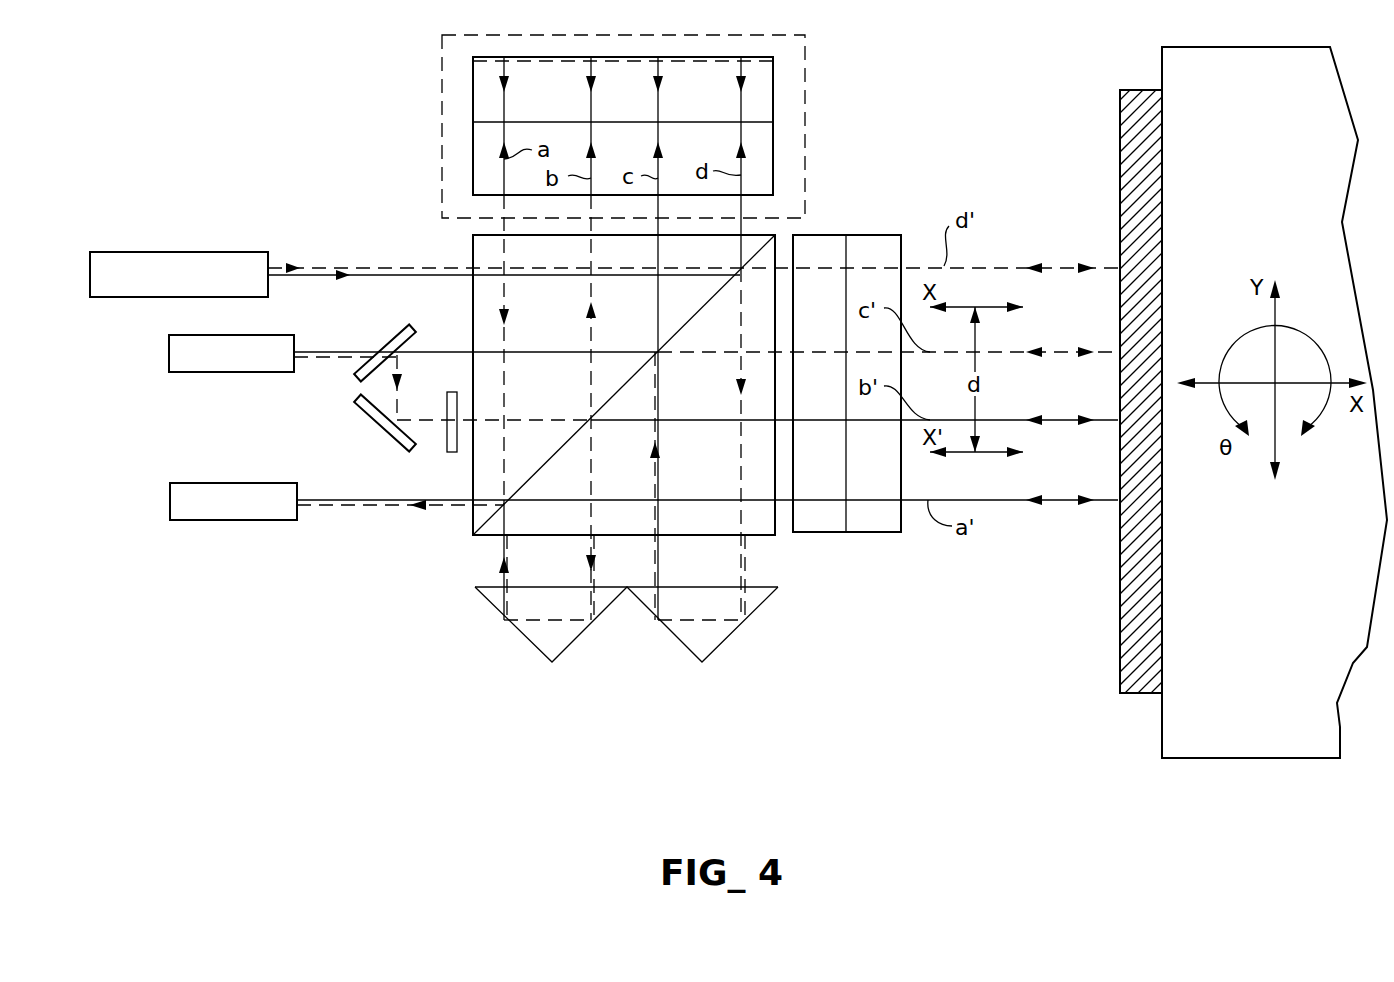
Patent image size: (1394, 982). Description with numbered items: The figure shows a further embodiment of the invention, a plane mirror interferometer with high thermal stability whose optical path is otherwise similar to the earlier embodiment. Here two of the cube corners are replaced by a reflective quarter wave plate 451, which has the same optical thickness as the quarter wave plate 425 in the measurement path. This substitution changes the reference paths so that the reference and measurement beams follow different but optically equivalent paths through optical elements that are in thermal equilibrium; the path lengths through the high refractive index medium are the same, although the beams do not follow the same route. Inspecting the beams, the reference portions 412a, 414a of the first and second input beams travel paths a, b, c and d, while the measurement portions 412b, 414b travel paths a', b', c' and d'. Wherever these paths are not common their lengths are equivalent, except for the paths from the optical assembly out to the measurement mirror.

The reference portion of beam 412 412a is at (385, 268).
The measurement portion of beam 412 412b is at (372, 278).
The reference portion of beam 414 414a is at (426, 416).
The measurement portion of beam 414 414b is at (430, 424).
The quarter wave plate 425 is at (820, 532).
The reflective quarter wave plate 451 is at (796, 122).